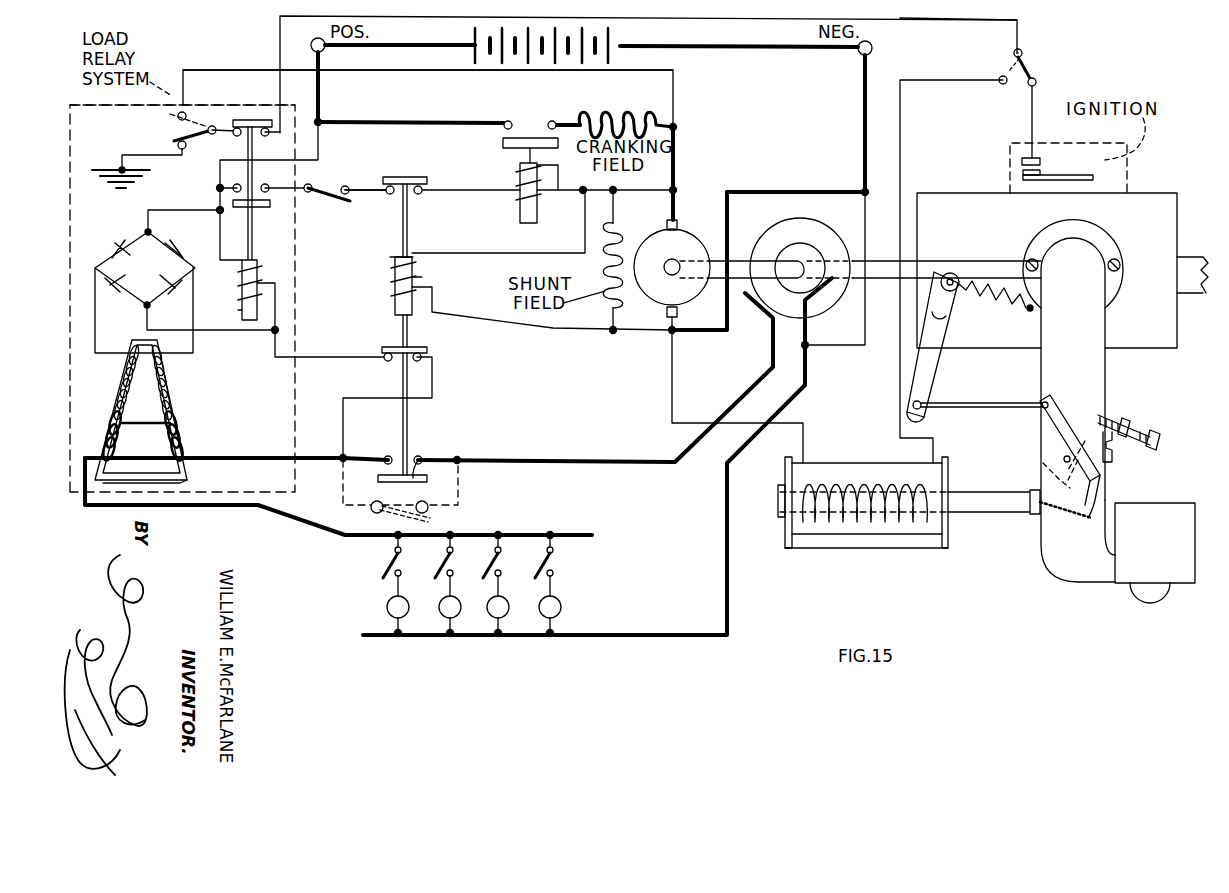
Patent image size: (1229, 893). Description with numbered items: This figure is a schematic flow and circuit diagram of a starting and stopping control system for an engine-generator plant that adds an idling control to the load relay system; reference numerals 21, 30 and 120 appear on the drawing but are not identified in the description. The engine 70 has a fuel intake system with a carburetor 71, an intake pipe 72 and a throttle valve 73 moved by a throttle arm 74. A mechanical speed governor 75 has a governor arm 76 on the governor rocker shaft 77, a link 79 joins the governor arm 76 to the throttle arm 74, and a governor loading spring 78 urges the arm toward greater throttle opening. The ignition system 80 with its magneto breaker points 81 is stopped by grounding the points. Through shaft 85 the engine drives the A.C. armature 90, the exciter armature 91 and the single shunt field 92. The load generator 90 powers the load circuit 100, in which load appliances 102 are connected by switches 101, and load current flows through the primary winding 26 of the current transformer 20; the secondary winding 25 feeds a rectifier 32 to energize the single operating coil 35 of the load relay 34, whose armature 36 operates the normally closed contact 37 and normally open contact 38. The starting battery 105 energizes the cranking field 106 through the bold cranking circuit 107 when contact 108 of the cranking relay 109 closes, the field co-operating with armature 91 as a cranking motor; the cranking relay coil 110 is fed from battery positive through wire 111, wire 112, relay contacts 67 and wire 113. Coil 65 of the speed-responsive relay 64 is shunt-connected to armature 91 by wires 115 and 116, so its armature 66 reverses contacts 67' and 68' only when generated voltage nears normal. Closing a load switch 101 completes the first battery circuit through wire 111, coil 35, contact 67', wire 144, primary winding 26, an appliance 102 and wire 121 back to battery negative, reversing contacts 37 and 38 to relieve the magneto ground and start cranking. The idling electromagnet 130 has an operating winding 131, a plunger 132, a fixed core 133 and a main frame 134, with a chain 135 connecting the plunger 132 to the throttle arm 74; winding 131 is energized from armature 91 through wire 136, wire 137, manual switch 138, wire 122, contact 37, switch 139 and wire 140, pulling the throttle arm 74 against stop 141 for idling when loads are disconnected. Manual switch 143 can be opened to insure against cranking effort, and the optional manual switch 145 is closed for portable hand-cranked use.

The current transformer 20 is at (180, 411).
The transformer core 21 is at (157, 478).
The secondary winding 25 is at (170, 384).
The primary winding 26 is at (182, 428).
The load relay system 30 is at (183, 100).
The rectifier 32 is at (110, 244).
The load relay 34 is at (238, 288).
The operating coil 35 is at (262, 262).
The armature 36 is at (243, 312).
The normally closed contact 37 is at (256, 120).
The normally open contact 38 is at (258, 206).
The speed-responsive relay 64 is at (380, 286).
The operating coil 65 is at (422, 277).
The armature 66 is at (412, 310).
The relay contacts 67 is at (405, 203).
The normally closed set of contacts 67' is at (391, 404).
The normally open set of contacts 68' is at (423, 453).
The engine 70 is at (1153, 205).
The carburetor 71 is at (1150, 510).
The intake pipe 72 is at (1095, 370).
The throttle valve 73 is at (1042, 462).
The throttle arm 74 is at (1056, 430).
The mechanical speed governor 75 is at (966, 326).
The governor arm 76 is at (934, 373).
The governor rocker shaft 77 is at (946, 282).
The governor loading spring 78 is at (1001, 290).
The link 79 is at (976, 408).
The ignition system 80 is at (1140, 156).
The magneto breaker points 81 is at (1042, 172).
The shaft 85 is at (882, 281).
The A.C. armature 90 is at (778, 230).
The exciter armature 91 is at (660, 240).
The shunt field 92 is at (607, 272).
The load circuit 100 is at (641, 460).
The load switches 101 is at (552, 567).
The load appliances 102 is at (561, 604).
The starting battery 105 is at (615, 32).
The cranking field 106 is at (622, 118).
The cranking circuit 107 is at (446, 120).
The cranking relay contact 108 is at (532, 138).
The cranking relay 109 is at (510, 180).
The cranking relay operating coil 110 is at (536, 190).
The wire 111 is at (320, 141).
The wire 112 is at (370, 194).
The wire 113 is at (494, 190).
The wire 115 is at (520, 253).
The wire 116 is at (524, 326).
The conductor 120 is at (352, 358).
The wire 121 is at (843, 348).
The wire 122 is at (942, 28).
The idling electromagnet 130 is at (896, 518).
The operating winding 131 is at (888, 480).
The plunger 132 is at (990, 514).
The fixed core 133 is at (778, 506).
The main frame 134 is at (944, 551).
The chain 135 is at (1070, 522).
The wire 136 is at (672, 372).
The wire 137 is at (912, 401).
The manual switch 138 is at (1030, 68).
The manual switch 139 is at (178, 118).
The wire 140 is at (383, 72).
The stop 141 is at (1120, 410).
The manual switch 143 is at (328, 198).
The wire 144 is at (432, 383).
The optional manual switch 145 is at (430, 512).